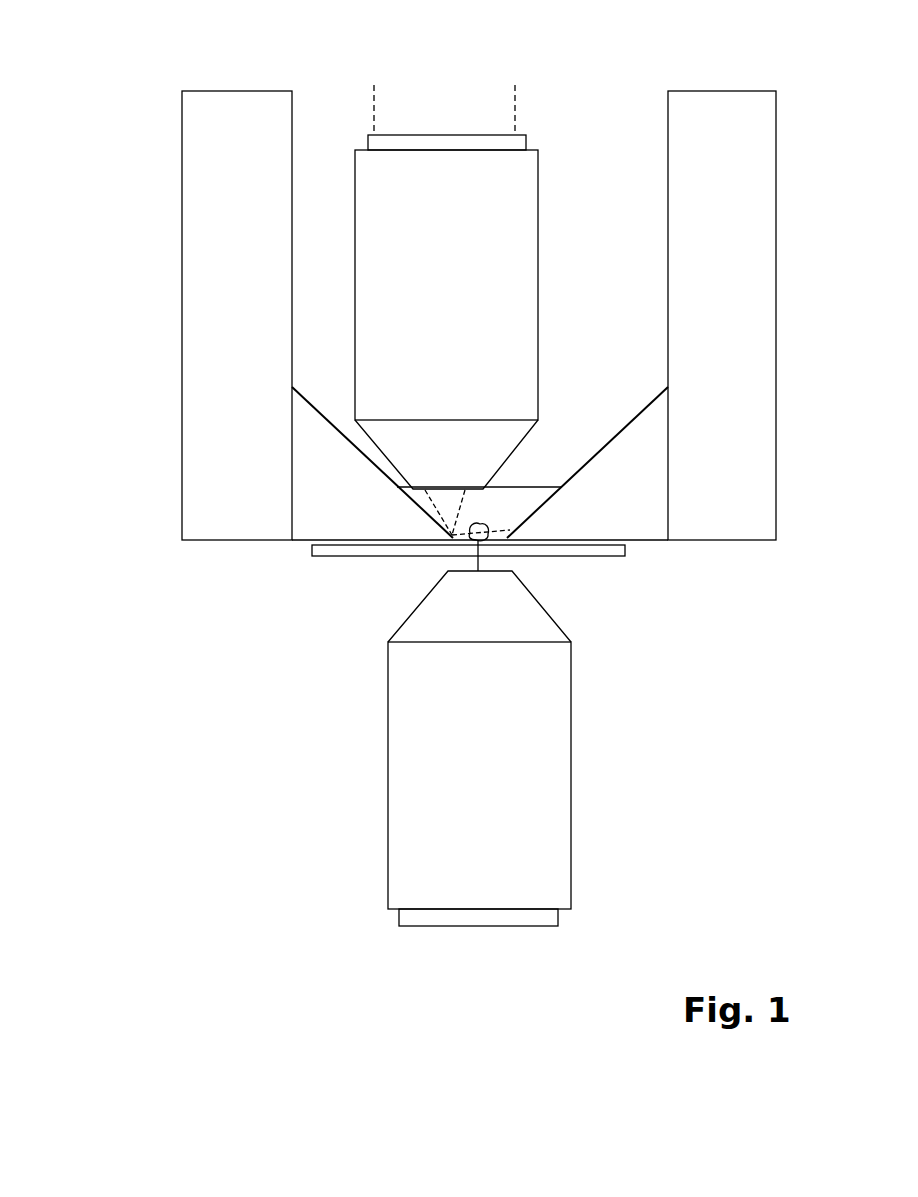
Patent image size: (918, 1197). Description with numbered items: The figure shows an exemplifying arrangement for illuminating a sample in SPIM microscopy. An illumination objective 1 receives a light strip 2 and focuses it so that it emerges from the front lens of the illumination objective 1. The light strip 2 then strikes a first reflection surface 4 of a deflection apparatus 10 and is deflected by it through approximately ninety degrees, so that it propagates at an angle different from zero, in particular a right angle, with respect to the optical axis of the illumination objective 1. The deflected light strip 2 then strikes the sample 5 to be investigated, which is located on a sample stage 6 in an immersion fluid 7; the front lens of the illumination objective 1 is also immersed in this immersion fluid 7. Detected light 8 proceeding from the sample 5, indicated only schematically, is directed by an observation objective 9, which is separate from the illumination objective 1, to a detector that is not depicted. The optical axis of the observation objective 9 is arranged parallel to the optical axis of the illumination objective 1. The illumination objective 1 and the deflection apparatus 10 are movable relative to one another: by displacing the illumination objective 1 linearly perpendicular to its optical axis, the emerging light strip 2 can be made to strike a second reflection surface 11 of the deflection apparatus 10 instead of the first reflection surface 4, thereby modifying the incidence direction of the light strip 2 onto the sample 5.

The illumination objective 1 is at (516, 340).
The light strip 2 is at (510, 111).
The first reflection surface 4 is at (324, 414).
The sample 5 is at (483, 523).
The sample stage 6 is at (352, 556).
The immersion fluid 7 is at (503, 487).
The detected light 8 is at (481, 558).
The observation objective 9 is at (550, 747).
The deflection apparatus 10 is at (158, 385).
The second reflection surface 11 is at (615, 430).